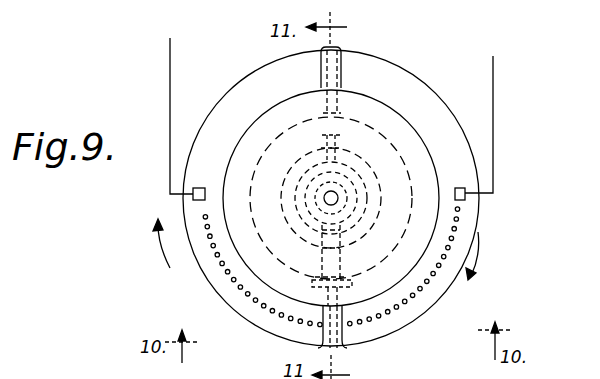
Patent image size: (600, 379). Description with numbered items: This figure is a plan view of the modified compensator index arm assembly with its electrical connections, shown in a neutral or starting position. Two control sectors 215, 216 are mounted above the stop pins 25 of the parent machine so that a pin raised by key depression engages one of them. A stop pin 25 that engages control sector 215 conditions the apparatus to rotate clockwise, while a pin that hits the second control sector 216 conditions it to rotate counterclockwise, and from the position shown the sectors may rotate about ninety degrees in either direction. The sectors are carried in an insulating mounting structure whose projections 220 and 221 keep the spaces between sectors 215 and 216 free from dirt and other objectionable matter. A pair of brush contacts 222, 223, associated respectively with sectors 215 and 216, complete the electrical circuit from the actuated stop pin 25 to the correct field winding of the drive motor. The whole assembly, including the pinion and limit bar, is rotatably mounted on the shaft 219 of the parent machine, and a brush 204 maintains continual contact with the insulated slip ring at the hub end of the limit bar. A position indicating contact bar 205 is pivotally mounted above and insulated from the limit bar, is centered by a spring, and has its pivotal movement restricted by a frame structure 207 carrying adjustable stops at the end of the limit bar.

The control sector 215 is at (252, 80).
The second control sector 216 is at (412, 82).
The projection 220 is at (340, 58).
The projection 221 is at (340, 337).
The shaft 219 is at (338, 197).
The brush 204 is at (319, 148).
The position indicating contact bar 205 is at (315, 282).
The frame structure 207 is at (352, 283).
The brush contact 222 is at (200, 188).
The brush contact 223 is at (462, 200).
The stop pins 25 is at (209, 217).